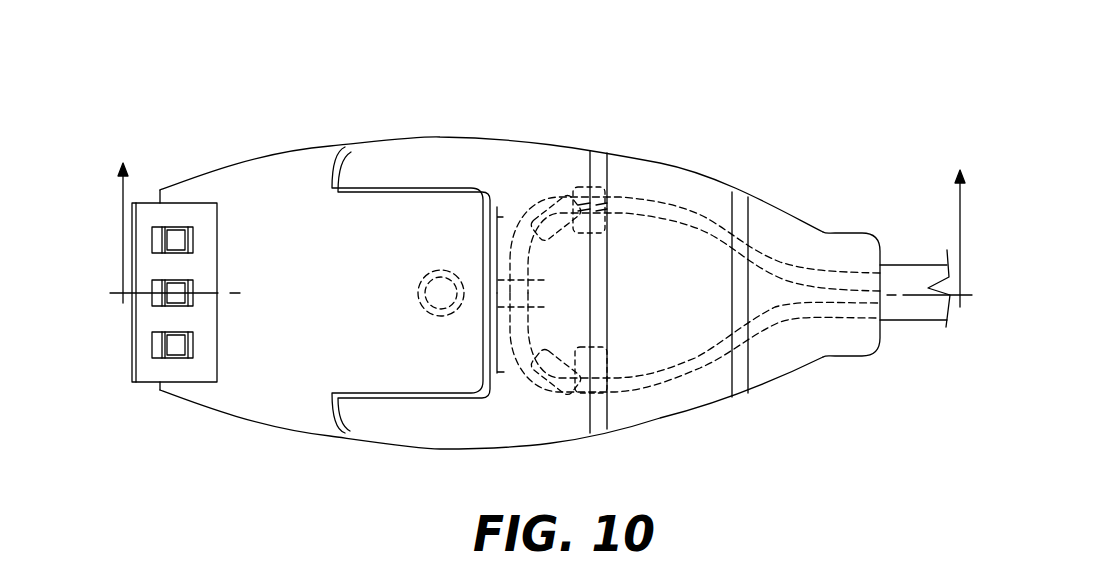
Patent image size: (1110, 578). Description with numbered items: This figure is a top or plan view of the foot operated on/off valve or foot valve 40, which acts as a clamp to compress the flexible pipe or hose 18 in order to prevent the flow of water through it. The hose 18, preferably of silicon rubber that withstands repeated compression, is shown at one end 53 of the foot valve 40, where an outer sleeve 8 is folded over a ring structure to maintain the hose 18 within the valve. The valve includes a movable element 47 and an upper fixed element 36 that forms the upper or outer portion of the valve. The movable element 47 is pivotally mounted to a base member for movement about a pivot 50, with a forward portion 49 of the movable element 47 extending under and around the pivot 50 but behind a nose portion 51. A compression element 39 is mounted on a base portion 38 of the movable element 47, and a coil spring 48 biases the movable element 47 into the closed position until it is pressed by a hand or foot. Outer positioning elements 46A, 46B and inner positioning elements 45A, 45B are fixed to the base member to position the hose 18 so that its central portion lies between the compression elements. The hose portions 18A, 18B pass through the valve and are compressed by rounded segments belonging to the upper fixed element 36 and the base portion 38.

The foot valve 40 is at (673, 122).
The movable element 47 is at (293, 200).
The forward portion 49 is at (176, 238).
The pivot 50 is at (212, 343).
The nose portion 51 is at (146, 350).
The outer sleeve 8 is at (902, 272).
The base portion 38 is at (517, 223).
The compression element 39 is at (517, 367).
The coil spring 48 is at (437, 270).
The outer positioning element 46A is at (553, 203).
The outer positioning element 46B is at (547, 383).
The inner positioning element 45A is at (575, 228).
The inner positioning element 45B is at (583, 352).
The hose 18A is at (683, 372).
The hose 18B is at (683, 273).
The flexible hose 18 is at (800, 272).
The upper fixed element 36 is at (743, 270).
The end 53 is at (843, 350).